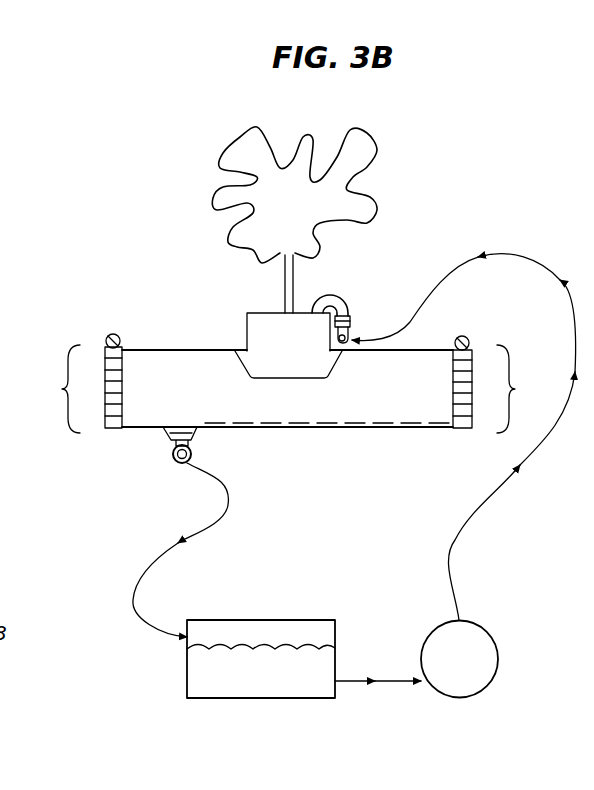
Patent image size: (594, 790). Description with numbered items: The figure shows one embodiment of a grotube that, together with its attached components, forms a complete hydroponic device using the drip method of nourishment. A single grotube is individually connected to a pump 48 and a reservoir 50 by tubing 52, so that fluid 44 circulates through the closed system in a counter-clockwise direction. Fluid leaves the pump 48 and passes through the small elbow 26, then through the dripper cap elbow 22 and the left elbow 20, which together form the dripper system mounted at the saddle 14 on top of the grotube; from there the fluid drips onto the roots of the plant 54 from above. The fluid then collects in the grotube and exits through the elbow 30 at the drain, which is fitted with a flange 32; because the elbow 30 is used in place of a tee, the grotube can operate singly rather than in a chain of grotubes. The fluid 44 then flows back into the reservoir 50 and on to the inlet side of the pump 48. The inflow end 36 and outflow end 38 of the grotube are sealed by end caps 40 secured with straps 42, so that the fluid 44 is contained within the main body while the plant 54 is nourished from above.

The saddle 14 is at (247, 330).
The left elbow 20 is at (320, 297).
The dripper cap elbow 22 is at (348, 300).
The alternate connector small elbow 26 is at (352, 323).
The elbow 30 is at (168, 452).
The flange 32 is at (196, 437).
The inflow end 36 is at (520, 389).
The outflow end 38 is at (243, 389).
The end cap 40 is at (106, 357).
The strap 42 is at (109, 429).
The fluid 44 is at (261, 667).
The pump 48 is at (497, 648).
The reservoir 50 is at (255, 620).
The tubing 52 is at (150, 560).
The plant 54 is at (222, 168).